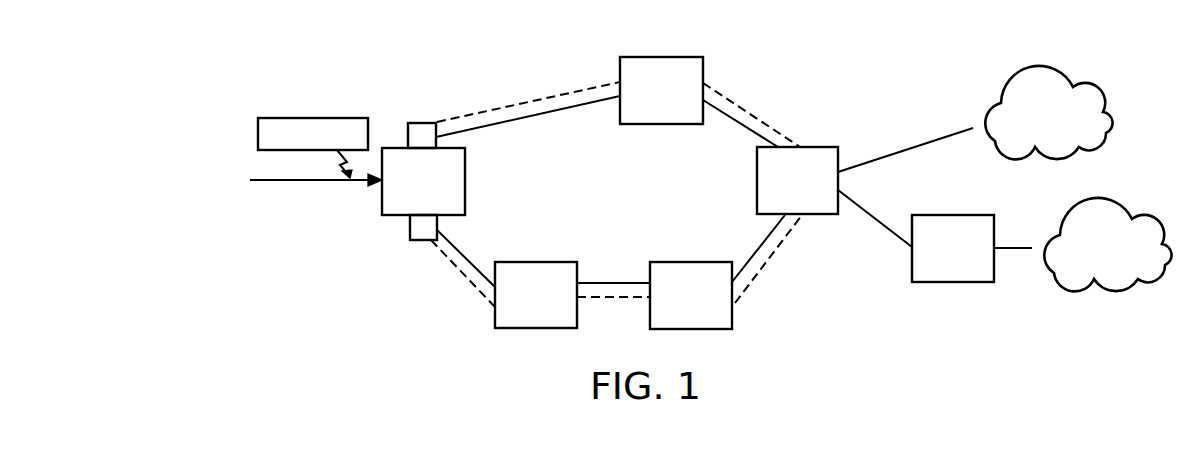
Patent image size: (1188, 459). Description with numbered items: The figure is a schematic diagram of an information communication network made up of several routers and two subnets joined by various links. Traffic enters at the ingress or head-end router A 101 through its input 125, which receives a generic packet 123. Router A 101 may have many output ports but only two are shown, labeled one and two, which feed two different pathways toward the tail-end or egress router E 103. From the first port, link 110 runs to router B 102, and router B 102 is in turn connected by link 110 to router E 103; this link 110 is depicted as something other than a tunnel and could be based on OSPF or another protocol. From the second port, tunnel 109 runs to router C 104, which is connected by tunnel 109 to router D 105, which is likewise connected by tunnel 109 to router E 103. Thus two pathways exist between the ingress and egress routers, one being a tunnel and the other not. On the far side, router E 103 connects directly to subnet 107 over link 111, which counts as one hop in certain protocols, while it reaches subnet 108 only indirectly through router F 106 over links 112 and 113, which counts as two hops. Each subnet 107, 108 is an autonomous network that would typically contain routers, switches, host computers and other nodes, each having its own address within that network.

The router A 101 is at (466, 184).
The router B 102 is at (650, 125).
The router E 103 is at (757, 184).
The router C 104 is at (545, 262).
The router D 105 is at (675, 262).
The router F 106 is at (965, 214).
The subnet 107 is at (1070, 80).
The subnet 108 is at (1120, 200).
The tunnel 109 is at (457, 272).
The link 110 is at (530, 103).
The link 111 is at (920, 148).
The link 112 is at (870, 212).
The link 113 is at (1015, 250).
The packet 123 is at (308, 117).
The input 125 is at (318, 183).